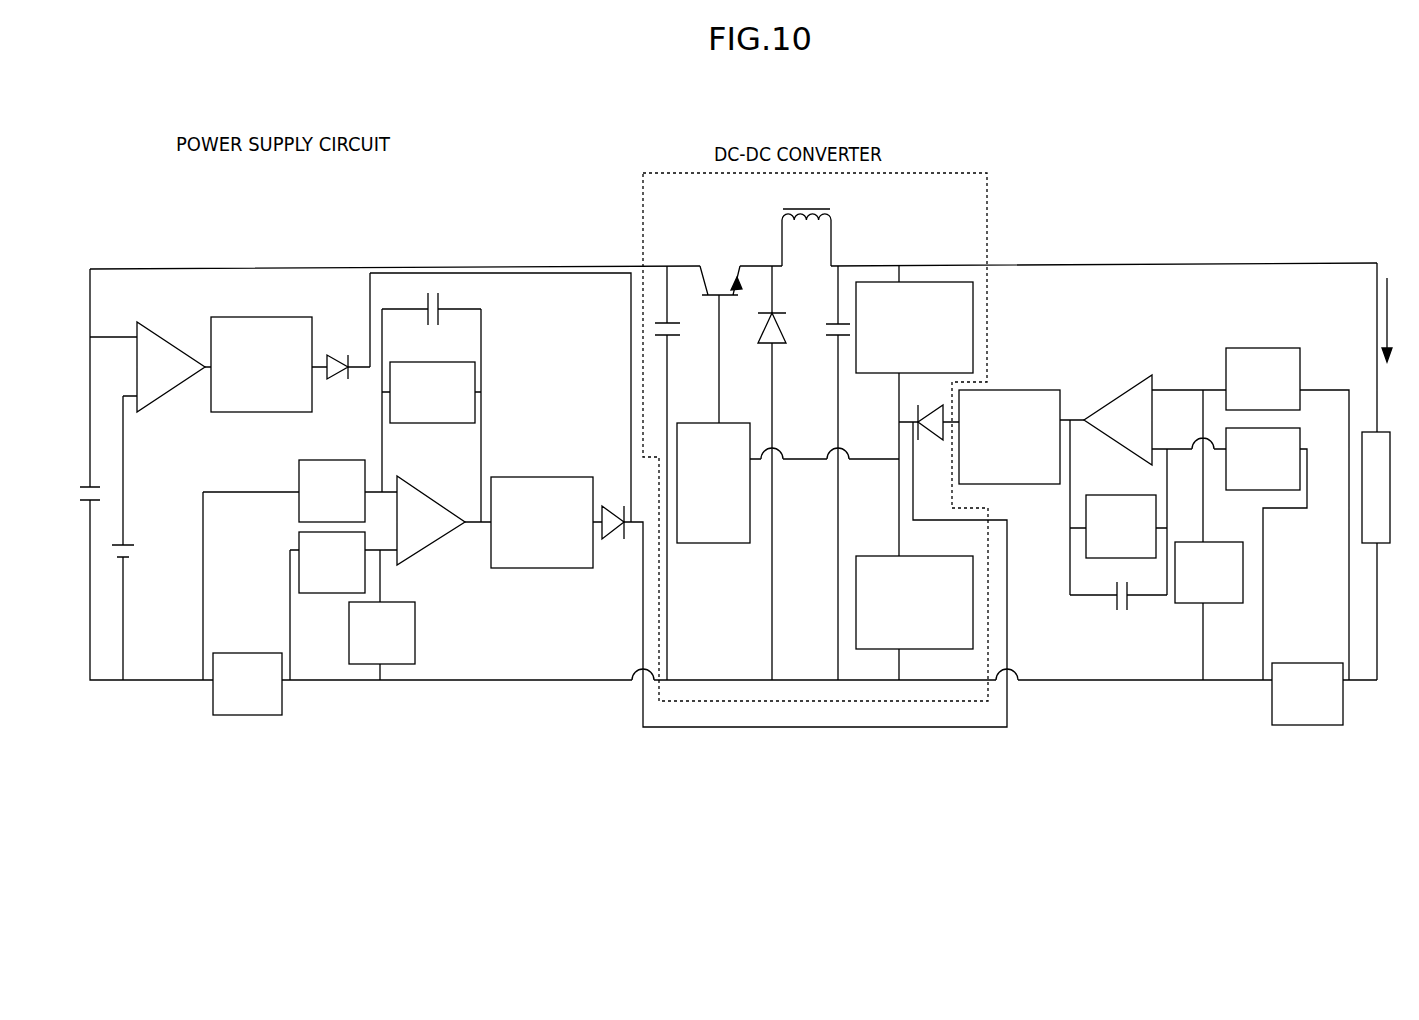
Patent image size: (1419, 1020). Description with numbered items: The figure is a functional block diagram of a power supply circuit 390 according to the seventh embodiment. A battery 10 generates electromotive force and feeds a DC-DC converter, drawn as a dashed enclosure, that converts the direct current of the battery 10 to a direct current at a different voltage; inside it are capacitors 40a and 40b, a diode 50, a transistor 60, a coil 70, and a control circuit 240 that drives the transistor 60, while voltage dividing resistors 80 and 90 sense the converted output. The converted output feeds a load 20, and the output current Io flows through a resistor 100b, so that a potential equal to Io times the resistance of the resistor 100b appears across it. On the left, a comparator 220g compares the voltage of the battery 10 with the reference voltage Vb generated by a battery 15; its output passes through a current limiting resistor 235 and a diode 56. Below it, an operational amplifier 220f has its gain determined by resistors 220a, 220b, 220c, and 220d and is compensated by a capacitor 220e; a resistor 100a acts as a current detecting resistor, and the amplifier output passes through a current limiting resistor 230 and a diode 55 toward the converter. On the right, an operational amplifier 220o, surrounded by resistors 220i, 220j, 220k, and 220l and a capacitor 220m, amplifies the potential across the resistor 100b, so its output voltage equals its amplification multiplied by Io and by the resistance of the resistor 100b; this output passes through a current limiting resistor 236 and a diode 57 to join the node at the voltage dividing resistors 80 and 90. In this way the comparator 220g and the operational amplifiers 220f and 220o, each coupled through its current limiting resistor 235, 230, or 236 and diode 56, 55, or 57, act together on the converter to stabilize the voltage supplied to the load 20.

The power supply circuit 390 is at (310, 232).
The battery 10 is at (97, 482).
The battery 15 is at (130, 537).
The load 20 is at (1368, 432).
The capacitor 40a is at (673, 320).
The capacitor 40b is at (834, 324).
The diode 50 is at (760, 334).
The diode 55 is at (608, 506).
The diode 56 is at (334, 354).
The diode 57 is at (923, 442).
The transistor 60 is at (734, 276).
The coil 70 is at (831, 220).
The voltage dividing resistor 80 is at (973, 318).
The voltage dividing resistor 90 is at (916, 552).
The resistor 100a is at (226, 653).
The resistor 100b is at (1300, 663).
The resistor 220a is at (400, 362).
The resistor 220b is at (415, 622).
The resistor 220c is at (299, 471).
The resistor 220d is at (299, 538).
The capacitor 220e is at (440, 302).
The operational amplifier 220f is at (432, 500).
The comparator 220g is at (170, 338).
The resistor 220i is at (1116, 495).
The resistor 220j is at (1300, 366).
The resistor 220k is at (1300, 442).
The resistor 220l is at (1212, 542).
The capacitor 220m is at (1130, 606).
The operational amplifier 220o is at (1122, 395).
The current limiting resistor 230 is at (520, 477).
The current limiting resistor 235 is at (266, 316).
The current limiting resistor 236 is at (1010, 390).
The control circuit 240 is at (738, 423).